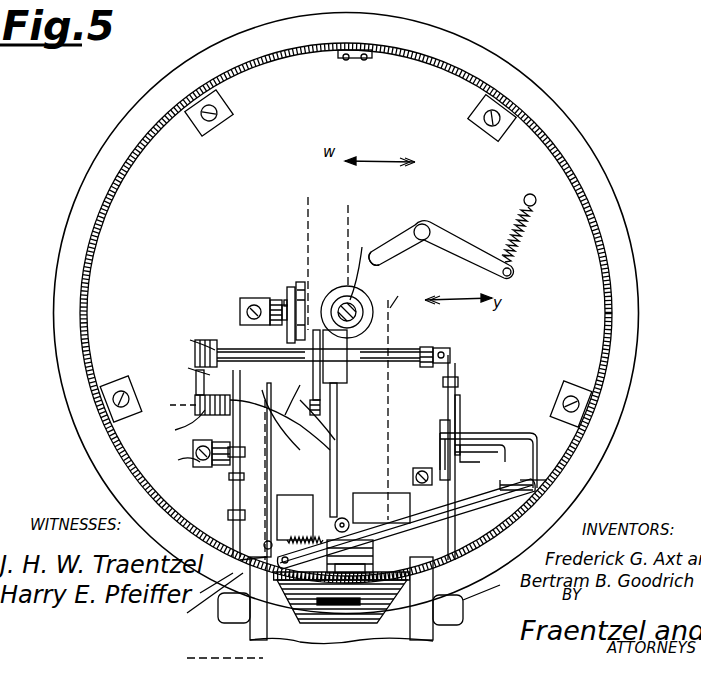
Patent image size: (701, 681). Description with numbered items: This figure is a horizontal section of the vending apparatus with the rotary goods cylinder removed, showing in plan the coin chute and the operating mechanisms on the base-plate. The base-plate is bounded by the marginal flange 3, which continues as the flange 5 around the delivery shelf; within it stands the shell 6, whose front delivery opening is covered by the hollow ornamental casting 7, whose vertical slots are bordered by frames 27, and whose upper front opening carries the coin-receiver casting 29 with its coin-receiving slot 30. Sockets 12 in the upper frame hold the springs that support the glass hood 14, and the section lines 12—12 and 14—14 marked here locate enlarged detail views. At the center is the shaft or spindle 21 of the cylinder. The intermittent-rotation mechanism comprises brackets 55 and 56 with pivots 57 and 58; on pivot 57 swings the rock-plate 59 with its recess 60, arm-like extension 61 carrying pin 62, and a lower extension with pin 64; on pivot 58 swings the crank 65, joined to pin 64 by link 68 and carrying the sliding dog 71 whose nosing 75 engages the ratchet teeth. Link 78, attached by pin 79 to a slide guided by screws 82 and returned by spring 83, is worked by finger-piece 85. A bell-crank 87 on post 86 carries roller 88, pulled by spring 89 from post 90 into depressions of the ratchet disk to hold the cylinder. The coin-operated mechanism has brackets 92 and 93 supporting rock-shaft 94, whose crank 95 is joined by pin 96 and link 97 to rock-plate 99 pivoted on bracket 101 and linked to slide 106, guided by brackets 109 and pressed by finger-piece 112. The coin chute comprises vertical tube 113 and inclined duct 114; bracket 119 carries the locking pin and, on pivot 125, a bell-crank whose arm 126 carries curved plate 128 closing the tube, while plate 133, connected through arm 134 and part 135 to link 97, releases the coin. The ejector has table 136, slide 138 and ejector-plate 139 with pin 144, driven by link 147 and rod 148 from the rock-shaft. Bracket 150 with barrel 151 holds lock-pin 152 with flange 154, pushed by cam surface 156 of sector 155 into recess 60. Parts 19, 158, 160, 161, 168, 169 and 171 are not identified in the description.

The marginal flange 3 is at (620, 215).
The marginal flange 5 is at (260, 633).
The shell 6 is at (542, 123).
The hollow ornamental casting 7 is at (395, 640).
The marginal socket 12 is at (238, 416).
The glass-closure or hood 14 is at (367, 345).
The shaft 19 is at (372, 300).
The shaft or spindle 21 is at (263, 337).
The frame 27 is at (337, 586).
The coin-receiver casting 29 is at (358, 612).
The coin-receiving slot 30 is at (340, 605).
The bracket or post 55 is at (198, 467).
The bracket or post 56 is at (266, 300).
The pivot or pin 57 is at (285, 478).
The pivot or pin 58 is at (352, 298).
The rock-plate 59 is at (235, 432).
The depression or recess 60 is at (300, 425).
The arm-like extension 61 is at (233, 496).
The pivot or pin 62 is at (228, 515).
The pivot or pin 64 is at (232, 478).
The crank 65 is at (290, 336).
The link 68 is at (337, 450).
The actuating dog or pawl 71 is at (303, 285).
The nosing or projection 75 is at (292, 286).
The link 78 is at (230, 540).
The pivot or pin 79 is at (240, 555).
The screws or pins 82 is at (245, 515).
The coiled spring 83 is at (297, 517).
The finger-piece 85 is at (230, 612).
The post 86 is at (424, 230).
The bell-crank 87 is at (503, 222).
The roller 88 is at (373, 247).
The coiled spring 89 is at (528, 250).
The pin or post 90 is at (530, 194).
The bracket or post 92 is at (443, 348).
The bracket or post 93 is at (242, 318).
The rock-shaft 94 is at (425, 347).
The crank 95 is at (457, 355).
The pivot or pin 96 is at (460, 380).
The link 97 is at (460, 400).
The rock-plate 99 is at (440, 445).
The bracket or post 101 is at (413, 470).
The reciprocatory slide 106 is at (407, 524).
The bracket 109 is at (510, 548).
The finger-piece 112 is at (448, 625).
The tubing part of coin-chute 113 is at (550, 493).
The inclined duct part of coin-chute 114 is at (381, 508).
The bracket or post 119 is at (472, 445).
The pin or pivot 125 is at (537, 440).
The arm-member 126 is at (533, 447).
The curved plate 128 is at (547, 480).
The closing plate 133 is at (540, 507).
The arm 134 is at (500, 440).
The part 135 is at (530, 432).
The table 136 is at (337, 450).
The slide 138 is at (345, 383).
The ejector-plate 139 is at (370, 385).
The pin 144 is at (355, 362).
The link 147 is at (290, 401).
The bar or rod 148 is at (320, 410).
The bracket or post 150 is at (195, 412).
The barrel or tubular member 151 is at (225, 379).
The lock-pin 152 is at (171, 427).
The annular flange 154 is at (171, 460).
The sector 155 is at (195, 345).
The cam-like surface 156 is at (177, 368).
The plate 158 is at (300, 620).
The block 160 is at (370, 550).
The block 161 is at (368, 566).
The spring 168 is at (297, 532).
The strut 169 is at (195, 604).
The bar 171 is at (342, 518).